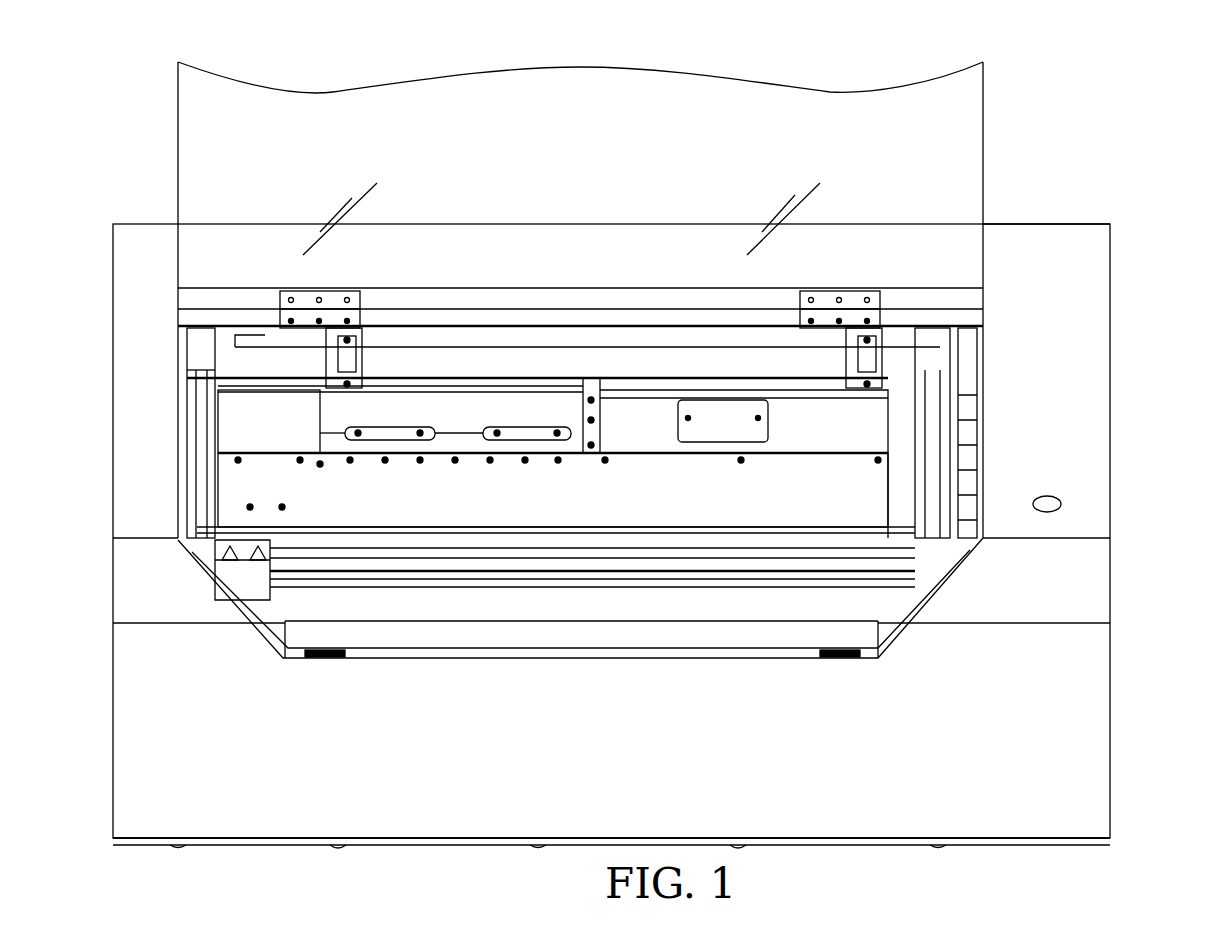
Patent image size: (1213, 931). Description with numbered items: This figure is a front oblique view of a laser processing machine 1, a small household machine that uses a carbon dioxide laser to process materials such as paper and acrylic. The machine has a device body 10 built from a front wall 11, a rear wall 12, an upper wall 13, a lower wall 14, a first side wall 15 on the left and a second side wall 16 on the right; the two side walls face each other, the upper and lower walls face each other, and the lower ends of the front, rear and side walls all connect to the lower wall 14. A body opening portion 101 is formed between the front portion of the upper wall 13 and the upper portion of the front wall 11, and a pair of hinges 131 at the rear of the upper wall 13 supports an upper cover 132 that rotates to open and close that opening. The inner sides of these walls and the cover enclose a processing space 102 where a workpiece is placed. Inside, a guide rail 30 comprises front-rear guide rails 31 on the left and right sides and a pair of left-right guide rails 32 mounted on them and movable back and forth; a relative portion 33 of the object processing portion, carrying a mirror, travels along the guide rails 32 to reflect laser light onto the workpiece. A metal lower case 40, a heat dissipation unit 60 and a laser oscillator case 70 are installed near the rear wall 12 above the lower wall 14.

The laser processing machine 1 is at (1104, 132).
The device body 10 is at (1128, 198).
The front wall 11 is at (1095, 765).
The rear wall 12 is at (1030, 224).
The upper wall 13 is at (1095, 377).
The lower wall 14 is at (1112, 850).
The first side wall 15 is at (113, 492).
The second side wall 16 is at (1112, 507).
The guide rail 30 is at (226, 718).
The guide rails 31 is at (940, 422).
The guide rails 32 is at (352, 540).
The relative portion of object processing portion 33 is at (267, 563).
The lower case 40 is at (870, 488).
The heat dissipation unit 60 is at (305, 412).
The laser oscillator case 70 is at (505, 340).
The body opening portion 101 is at (652, 622).
The processing space 102 is at (545, 616).
The hinges 131 is at (293, 300).
The upper cover 132 is at (590, 115).